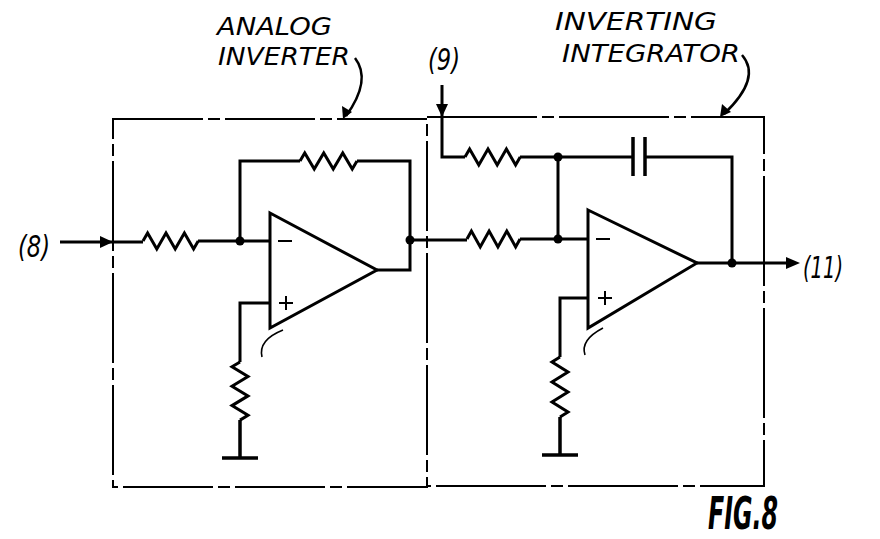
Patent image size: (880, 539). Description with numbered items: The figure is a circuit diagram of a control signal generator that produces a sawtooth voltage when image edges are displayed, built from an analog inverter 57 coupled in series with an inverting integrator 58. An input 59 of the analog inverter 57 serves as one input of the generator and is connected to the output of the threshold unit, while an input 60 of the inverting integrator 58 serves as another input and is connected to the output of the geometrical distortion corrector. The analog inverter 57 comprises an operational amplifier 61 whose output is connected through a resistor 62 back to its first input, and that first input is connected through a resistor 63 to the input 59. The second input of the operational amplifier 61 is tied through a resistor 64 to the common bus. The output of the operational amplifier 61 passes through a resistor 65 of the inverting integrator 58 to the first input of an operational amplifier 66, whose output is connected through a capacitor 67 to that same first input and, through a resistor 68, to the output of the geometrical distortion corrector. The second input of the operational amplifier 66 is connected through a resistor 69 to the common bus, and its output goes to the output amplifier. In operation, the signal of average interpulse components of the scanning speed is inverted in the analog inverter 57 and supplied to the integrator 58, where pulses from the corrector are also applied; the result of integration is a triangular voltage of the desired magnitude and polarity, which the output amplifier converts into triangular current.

The analog inverter 57 is at (153, 116).
The inverting integrator 58 is at (527, 112).
The input 59 is at (108, 250).
The input 60 is at (446, 112).
The operational amplifier 61 is at (344, 282).
The resistor 62 is at (325, 170).
The resistor 63 is at (175, 240).
The resistor 64 is at (232, 400).
The resistor 65 is at (485, 248).
The operational amplifier 66 is at (654, 290).
The capacitor 67 is at (650, 166).
The resistor 68 is at (500, 168).
The resistor 69 is at (554, 398).